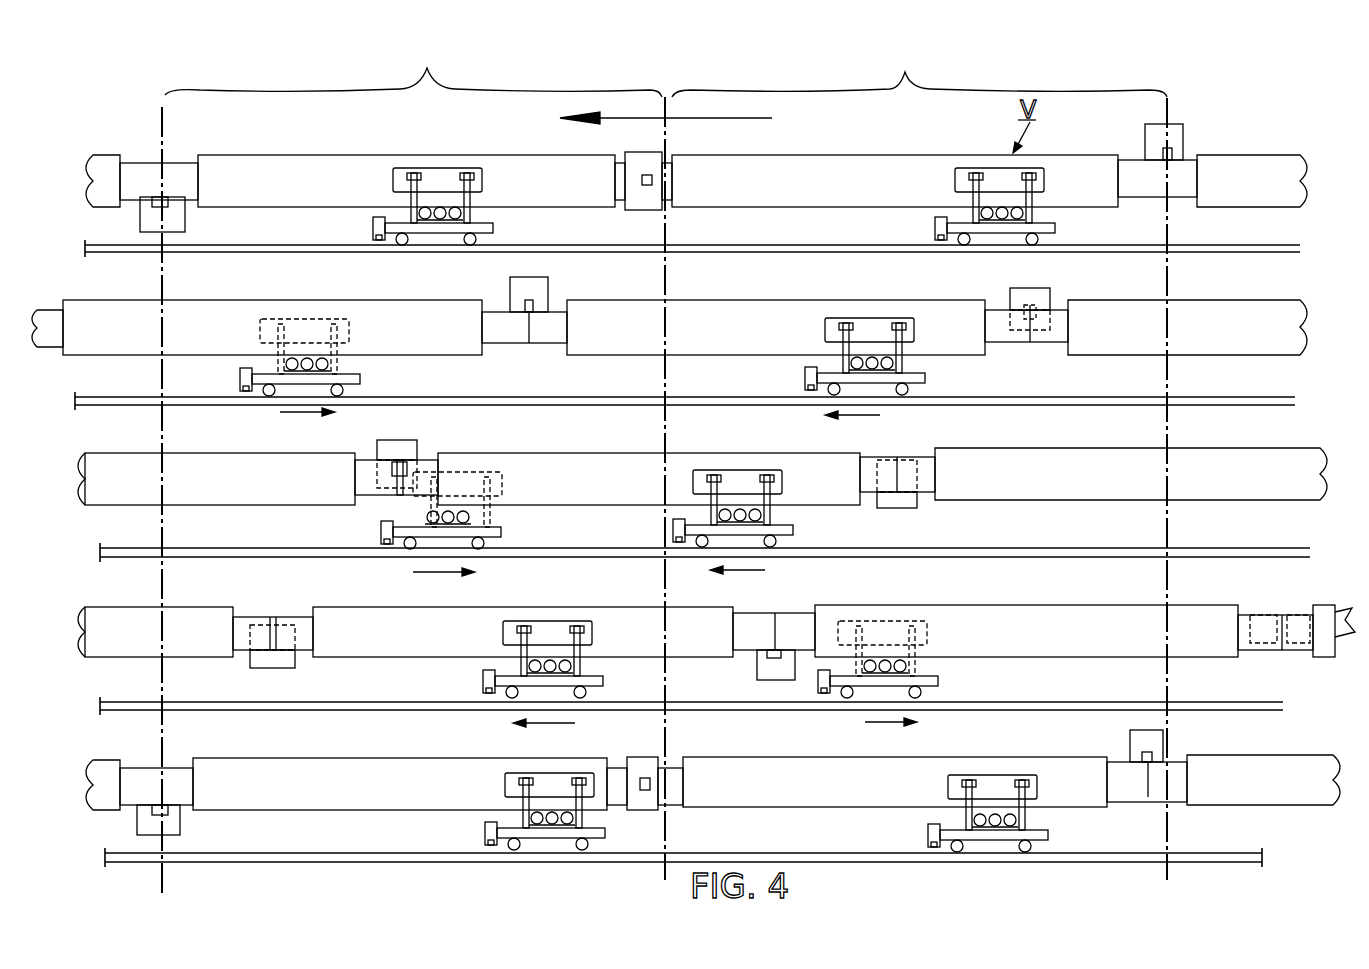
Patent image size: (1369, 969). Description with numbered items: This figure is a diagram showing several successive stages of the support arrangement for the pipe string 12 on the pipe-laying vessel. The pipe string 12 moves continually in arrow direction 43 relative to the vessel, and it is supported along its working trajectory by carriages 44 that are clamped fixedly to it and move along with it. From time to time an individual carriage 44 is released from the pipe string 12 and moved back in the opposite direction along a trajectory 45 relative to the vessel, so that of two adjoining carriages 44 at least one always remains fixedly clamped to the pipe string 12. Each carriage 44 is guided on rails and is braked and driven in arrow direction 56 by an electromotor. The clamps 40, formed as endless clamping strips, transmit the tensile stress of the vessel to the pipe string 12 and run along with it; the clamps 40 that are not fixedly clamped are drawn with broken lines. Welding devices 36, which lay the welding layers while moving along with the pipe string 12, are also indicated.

The pipe string 12 is at (290, 155).
The welding device 36 is at (188, 213).
The clamp 40 is at (450, 170).
The arrow direction 43 is at (625, 118).
The carriage 44 is at (436, 235).
The trajectory 45 is at (666, 66).
The arrow direction 56 is at (308, 415).